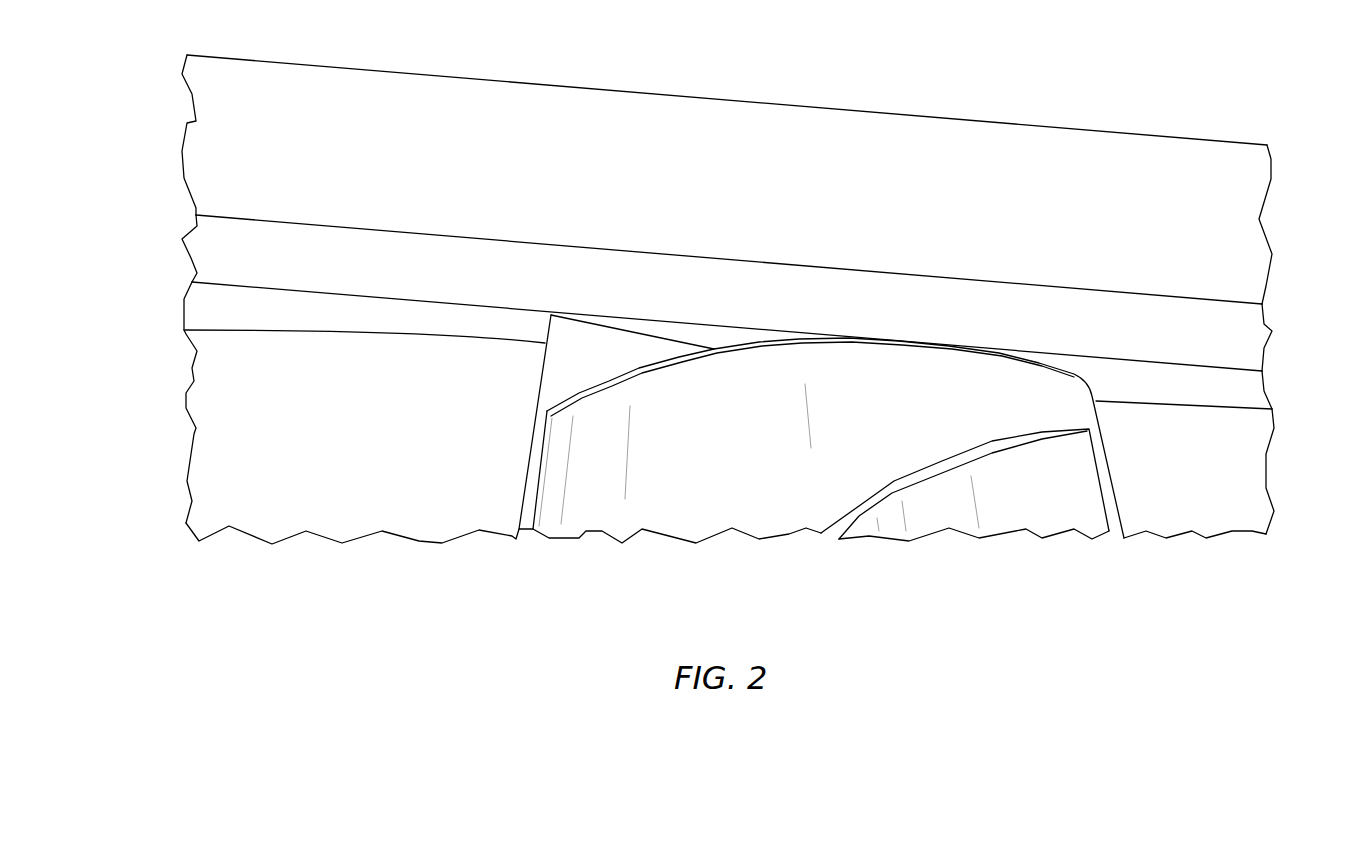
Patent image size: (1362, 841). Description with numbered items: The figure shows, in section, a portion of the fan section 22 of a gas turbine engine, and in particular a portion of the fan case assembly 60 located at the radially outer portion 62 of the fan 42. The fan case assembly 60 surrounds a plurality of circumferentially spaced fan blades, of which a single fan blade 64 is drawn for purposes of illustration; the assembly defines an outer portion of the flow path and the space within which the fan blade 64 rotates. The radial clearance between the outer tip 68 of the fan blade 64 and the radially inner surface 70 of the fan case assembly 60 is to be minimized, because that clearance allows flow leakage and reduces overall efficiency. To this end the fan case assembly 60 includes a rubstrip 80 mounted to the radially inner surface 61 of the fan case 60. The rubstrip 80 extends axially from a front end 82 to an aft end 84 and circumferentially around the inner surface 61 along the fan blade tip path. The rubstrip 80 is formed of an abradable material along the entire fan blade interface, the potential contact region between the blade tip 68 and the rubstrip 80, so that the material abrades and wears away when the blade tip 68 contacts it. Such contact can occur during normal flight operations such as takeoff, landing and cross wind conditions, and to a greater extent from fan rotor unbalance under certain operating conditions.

The fan section 22 is at (182, 440).
The fan 42 is at (1048, 552).
The fan case assembly 60 is at (203, 90).
The radially inner surface of fan case 61 is at (1140, 292).
The radially outer portion 62 is at (176, 312).
The fan blade 64 is at (778, 511).
The outer tip 68 is at (750, 347).
The radially inner surface of fan case assembly 70 is at (237, 287).
The rubstrip 80 is at (397, 278).
The front end 82 is at (188, 257).
The aft end 84 is at (1272, 337).